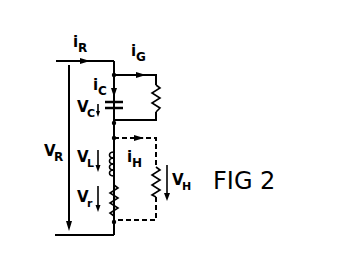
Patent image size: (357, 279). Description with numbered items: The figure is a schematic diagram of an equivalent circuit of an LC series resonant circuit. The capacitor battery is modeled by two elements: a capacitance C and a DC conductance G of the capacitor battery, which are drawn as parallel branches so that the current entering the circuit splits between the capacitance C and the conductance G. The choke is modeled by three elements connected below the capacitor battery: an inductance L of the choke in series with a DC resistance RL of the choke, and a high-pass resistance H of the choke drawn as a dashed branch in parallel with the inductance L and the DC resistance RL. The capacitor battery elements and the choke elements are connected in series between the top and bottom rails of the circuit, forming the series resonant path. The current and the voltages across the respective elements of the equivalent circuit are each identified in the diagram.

The DC conductance of the capacitor battery G is at (160, 96).
The capacitance of the capacitor battery C is at (124, 110).
The inductance of the choke L is at (121, 168).
The DC resistance of the choke RL is at (124, 200).
The high-pass resistance of the choke H is at (151, 185).